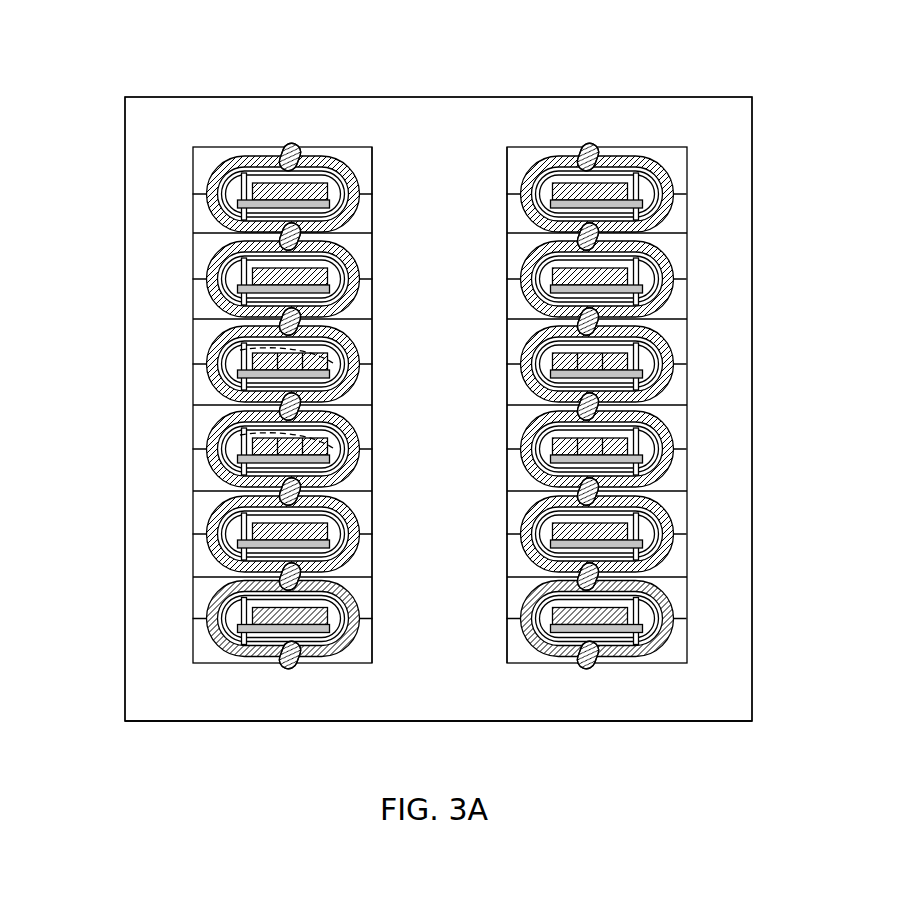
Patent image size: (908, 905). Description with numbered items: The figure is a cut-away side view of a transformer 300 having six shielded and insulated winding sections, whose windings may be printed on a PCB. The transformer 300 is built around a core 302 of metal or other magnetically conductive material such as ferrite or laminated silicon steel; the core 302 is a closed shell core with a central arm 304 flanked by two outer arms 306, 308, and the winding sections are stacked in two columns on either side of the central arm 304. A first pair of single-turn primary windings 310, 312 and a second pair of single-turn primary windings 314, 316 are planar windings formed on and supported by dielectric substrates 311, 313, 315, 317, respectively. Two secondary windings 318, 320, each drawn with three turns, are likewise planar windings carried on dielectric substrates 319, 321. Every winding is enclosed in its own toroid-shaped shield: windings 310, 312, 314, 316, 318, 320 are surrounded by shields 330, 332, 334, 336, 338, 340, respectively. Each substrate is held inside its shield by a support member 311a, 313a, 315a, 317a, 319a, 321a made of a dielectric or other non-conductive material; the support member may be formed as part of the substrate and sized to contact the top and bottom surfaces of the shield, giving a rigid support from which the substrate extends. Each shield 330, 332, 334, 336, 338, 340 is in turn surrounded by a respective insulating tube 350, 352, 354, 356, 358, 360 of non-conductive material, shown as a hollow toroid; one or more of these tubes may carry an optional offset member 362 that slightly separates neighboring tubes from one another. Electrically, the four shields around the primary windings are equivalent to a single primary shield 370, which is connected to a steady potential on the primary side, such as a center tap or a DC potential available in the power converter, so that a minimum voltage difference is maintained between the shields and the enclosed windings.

The transformer 300 is at (830, 109).
The core 302 is at (285, 705).
The central arm 304 is at (462, 660).
The outer arm 306 is at (277, 112).
The outer arm 308 is at (717, 107).
The primary winding 310 is at (282, 184).
The substrate 311 is at (670, 212).
The support member 311a is at (670, 188).
The primary winding 312 is at (215, 270).
The substrate 313 is at (670, 297).
The support member 313a is at (670, 273).
The primary winding 314 is at (215, 528).
The substrate 315 is at (670, 552).
The support member 315a is at (668, 527).
The primary winding 316 is at (222, 637).
The substrate 317 is at (625, 632).
The support member 317a is at (625, 617).
The secondary winding 318 is at (240, 350).
The substrate 319 is at (670, 382).
The support member 319a is at (670, 358).
The secondary winding 320 is at (240, 435).
The substrate 321 is at (670, 455).
The support member 321a is at (670, 440).
The shield 330 is at (215, 190).
The shield 332 is at (255, 272).
The shield 334 is at (255, 528).
The shield 336 is at (280, 642).
The shield 338 is at (255, 358).
The shield 340 is at (255, 443).
The insulating tube 350 is at (252, 176).
The insulating tube 352 is at (238, 206).
The insulating tube 354 is at (240, 541).
The insulating tube 356 is at (247, 642).
The insulating tube 358 is at (240, 372).
The insulating tube 360 is at (240, 457).
The offset member 362 is at (670, 467).
The primary shield 370 is at (668, 552).